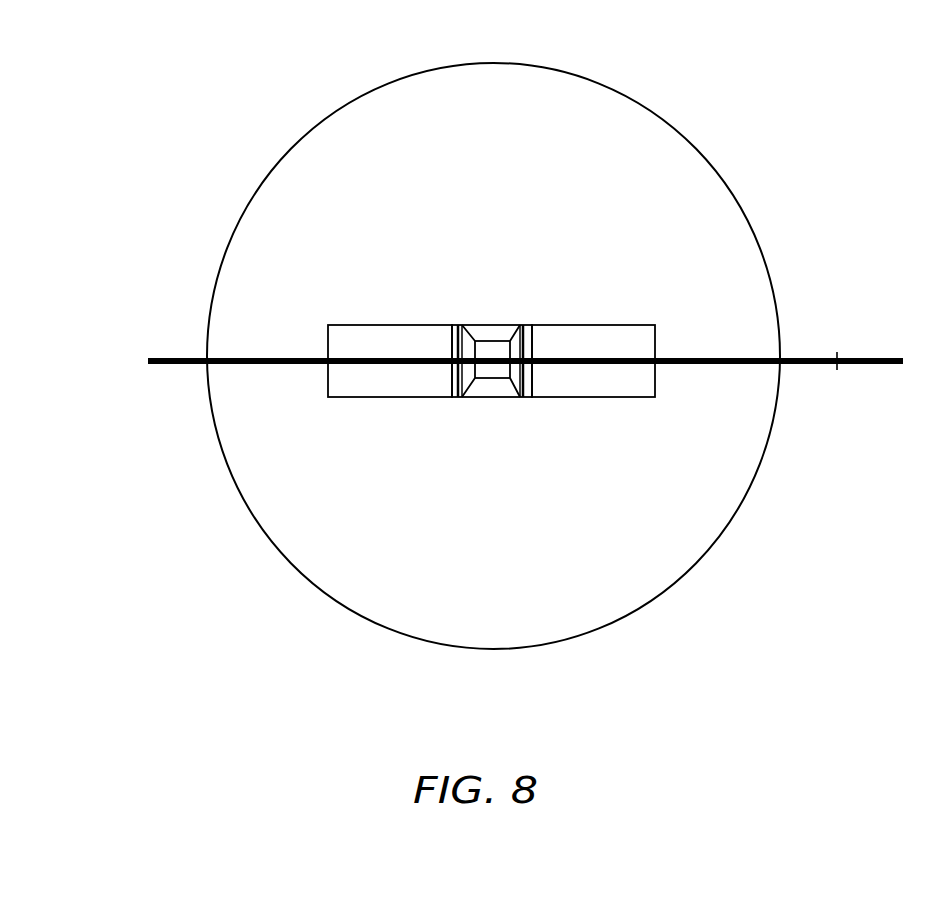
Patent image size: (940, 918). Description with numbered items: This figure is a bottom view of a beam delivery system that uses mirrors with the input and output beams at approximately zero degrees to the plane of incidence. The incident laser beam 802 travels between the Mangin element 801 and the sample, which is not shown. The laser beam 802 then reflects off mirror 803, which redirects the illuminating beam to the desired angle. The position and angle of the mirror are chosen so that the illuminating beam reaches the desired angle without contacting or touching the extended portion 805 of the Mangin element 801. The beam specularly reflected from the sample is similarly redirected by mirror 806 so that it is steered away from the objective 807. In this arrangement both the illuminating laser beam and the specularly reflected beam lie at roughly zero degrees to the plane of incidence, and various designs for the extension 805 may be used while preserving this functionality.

The Mangin element 801 is at (682, 137).
The incident laser beam 802 is at (171, 350).
The mirror 803 is at (392, 385).
The extended portion 805 is at (490, 323).
The mirror 806 is at (602, 382).
The objective 807 is at (815, 344).